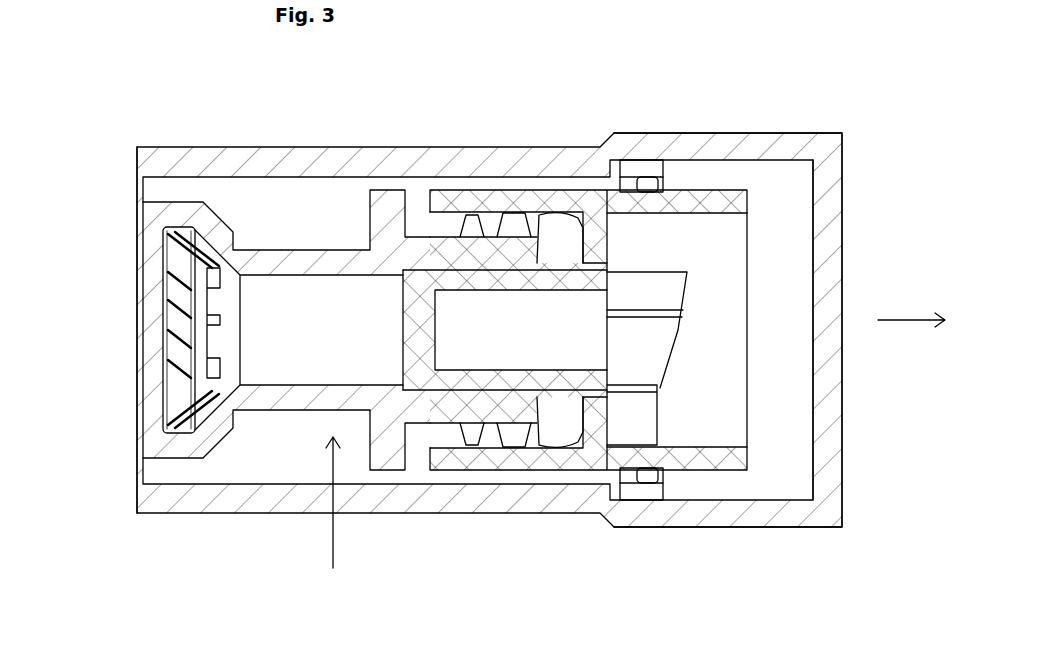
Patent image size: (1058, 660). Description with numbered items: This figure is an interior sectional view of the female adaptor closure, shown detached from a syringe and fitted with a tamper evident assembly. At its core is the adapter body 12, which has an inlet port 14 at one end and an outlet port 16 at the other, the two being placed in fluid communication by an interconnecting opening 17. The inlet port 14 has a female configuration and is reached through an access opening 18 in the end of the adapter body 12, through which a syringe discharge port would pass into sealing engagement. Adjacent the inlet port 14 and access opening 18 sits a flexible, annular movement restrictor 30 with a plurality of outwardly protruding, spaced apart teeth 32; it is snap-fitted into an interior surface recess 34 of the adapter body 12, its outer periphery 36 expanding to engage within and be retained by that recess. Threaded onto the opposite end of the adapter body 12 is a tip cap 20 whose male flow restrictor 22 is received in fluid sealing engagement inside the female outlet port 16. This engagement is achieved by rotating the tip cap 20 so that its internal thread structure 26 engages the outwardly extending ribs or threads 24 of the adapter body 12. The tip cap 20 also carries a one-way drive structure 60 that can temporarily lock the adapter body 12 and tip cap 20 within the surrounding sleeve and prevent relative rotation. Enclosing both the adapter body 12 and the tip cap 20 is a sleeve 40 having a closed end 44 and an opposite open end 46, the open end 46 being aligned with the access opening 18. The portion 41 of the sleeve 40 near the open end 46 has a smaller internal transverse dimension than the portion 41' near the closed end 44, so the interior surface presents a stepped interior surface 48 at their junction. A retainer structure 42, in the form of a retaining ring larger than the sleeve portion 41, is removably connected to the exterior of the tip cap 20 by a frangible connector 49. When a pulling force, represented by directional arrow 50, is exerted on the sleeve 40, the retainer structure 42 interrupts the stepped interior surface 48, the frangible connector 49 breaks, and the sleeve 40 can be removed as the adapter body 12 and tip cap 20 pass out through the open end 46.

The adapter body 12 is at (332, 511).
The inlet port 14 is at (310, 262).
The outlet port 16 is at (503, 408).
The interconnecting opening 17 is at (403, 277).
The access opening 18 is at (165, 237).
The tip cap 20 is at (616, 334).
The flow restrictor 22 is at (464, 315).
The threads 24 is at (515, 223).
The internal thread structure 26 is at (497, 430).
The movement restrictor 30 is at (160, 399).
The teeth 32 is at (210, 410).
The interior surface recess 34 is at (177, 433).
The outer periphery 36 is at (165, 281).
The sleeve 40 is at (488, 297).
The smaller dimensioned sleeve portion 41 is at (448, 297).
The larger dimensioned sleeve portion 41' is at (728, 297).
The retainer structure 42 is at (652, 475).
The closed end 44 is at (836, 392).
The open end 46 is at (137, 187).
The stepped interior surface 48 is at (617, 177).
The frangible connector 49 is at (652, 163).
The directional arrow 50 is at (893, 320).
The one-way drive structure 60 is at (722, 393).